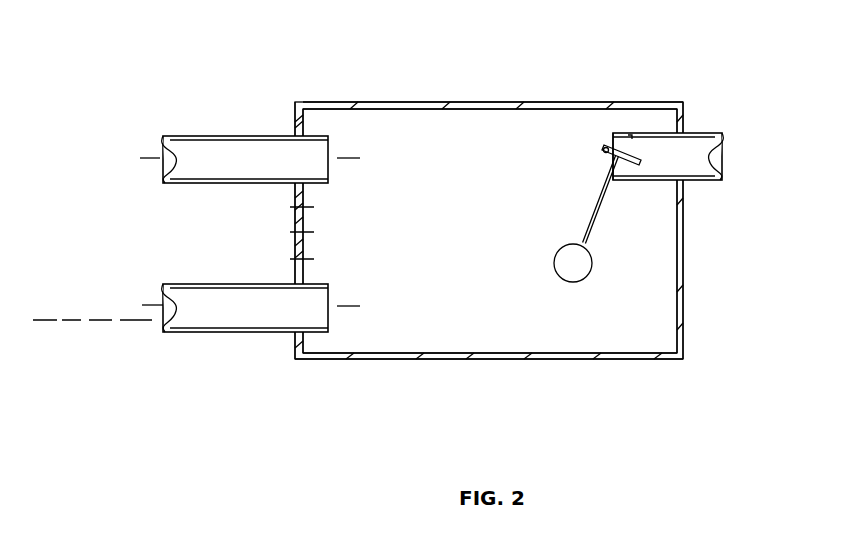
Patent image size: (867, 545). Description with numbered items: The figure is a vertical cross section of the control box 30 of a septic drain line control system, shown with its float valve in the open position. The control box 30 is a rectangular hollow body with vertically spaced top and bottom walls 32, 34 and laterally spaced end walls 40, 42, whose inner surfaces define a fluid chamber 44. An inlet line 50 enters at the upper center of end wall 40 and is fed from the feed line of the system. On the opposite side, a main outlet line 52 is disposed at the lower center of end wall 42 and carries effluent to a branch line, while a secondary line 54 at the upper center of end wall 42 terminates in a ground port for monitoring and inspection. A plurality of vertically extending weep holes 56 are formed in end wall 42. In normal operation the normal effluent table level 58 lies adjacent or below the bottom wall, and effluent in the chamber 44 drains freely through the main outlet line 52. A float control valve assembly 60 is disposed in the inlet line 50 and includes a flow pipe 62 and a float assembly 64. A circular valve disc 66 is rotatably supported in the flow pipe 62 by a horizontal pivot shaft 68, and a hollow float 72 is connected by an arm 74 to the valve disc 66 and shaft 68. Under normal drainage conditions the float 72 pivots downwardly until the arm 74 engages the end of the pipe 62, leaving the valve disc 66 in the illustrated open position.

The control box 30 is at (652, 101).
The top wall 32 is at (507, 102).
The bottom wall 34 is at (543, 359).
The end wall 40 is at (683, 333).
The end wall 42 is at (296, 340).
The fluid chamber 44 is at (427, 293).
The inlet line 50 is at (712, 178).
The main outlet line 52 is at (200, 333).
The secondary line 54 is at (192, 134).
The weep holes 56 is at (297, 257).
The normal effluent table level 58 is at (75, 320).
The float control valve assembly 60 is at (542, 155).
The flow pipe 62 is at (648, 181).
The float assembly 64 is at (581, 233).
The valve disc 66 is at (603, 152).
The pivot shaft 68 is at (622, 148).
The float 72 is at (562, 276).
The arm 74 is at (592, 230).